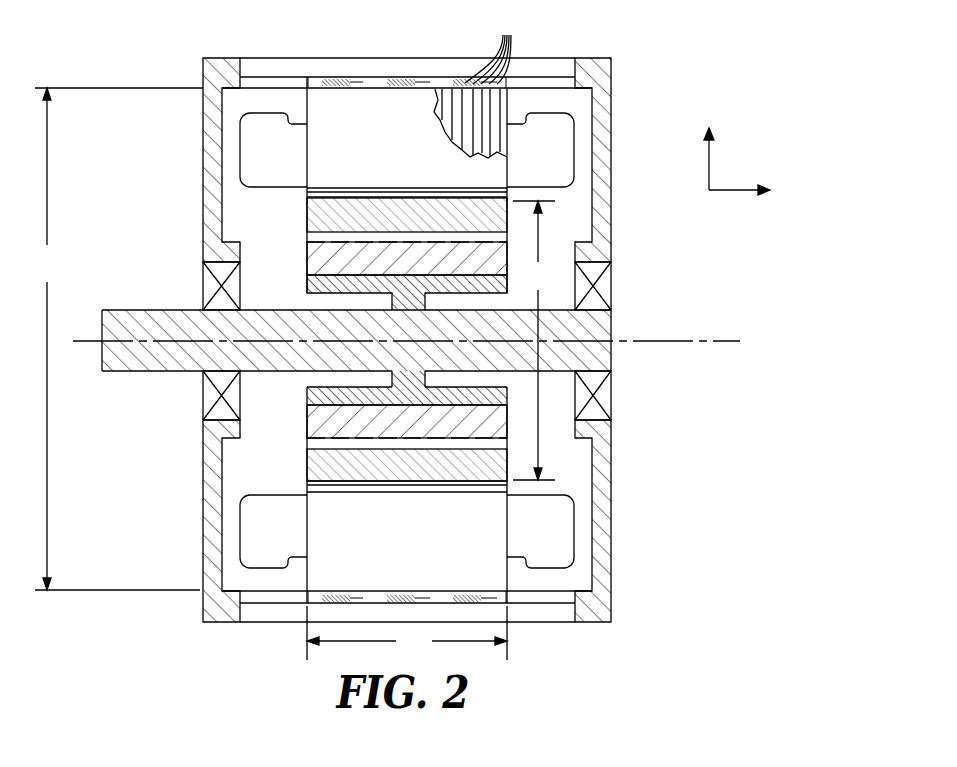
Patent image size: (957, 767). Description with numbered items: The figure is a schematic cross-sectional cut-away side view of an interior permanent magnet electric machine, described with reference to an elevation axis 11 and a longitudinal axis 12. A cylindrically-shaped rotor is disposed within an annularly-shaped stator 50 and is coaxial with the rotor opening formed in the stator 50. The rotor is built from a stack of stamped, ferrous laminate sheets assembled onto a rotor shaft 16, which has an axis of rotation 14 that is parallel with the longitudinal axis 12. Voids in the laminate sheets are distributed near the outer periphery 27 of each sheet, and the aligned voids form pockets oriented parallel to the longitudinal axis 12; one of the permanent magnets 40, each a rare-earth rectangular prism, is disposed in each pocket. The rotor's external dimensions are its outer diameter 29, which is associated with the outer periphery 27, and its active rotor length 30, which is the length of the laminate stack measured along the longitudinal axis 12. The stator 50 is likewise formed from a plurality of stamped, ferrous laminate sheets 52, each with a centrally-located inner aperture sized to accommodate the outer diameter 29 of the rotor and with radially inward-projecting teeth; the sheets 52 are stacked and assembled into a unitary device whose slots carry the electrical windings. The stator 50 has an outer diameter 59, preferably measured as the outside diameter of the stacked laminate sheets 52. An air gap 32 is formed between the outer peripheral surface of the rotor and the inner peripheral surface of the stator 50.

The elevation axis 11 is at (698, 127).
The longitudinal axis 12 is at (771, 204).
The axis of rotation 14 is at (707, 337).
The rotor shaft 16 is at (158, 373).
The outer periphery 27 is at (412, 199).
The outer diameter 29 is at (525, 289).
The active rotor length 30 is at (400, 655).
The air gap 32 is at (372, 193).
The permanent magnets 40 is at (320, 217).
The stator 50 is at (307, 112).
The laminate sheets 52 is at (477, 84).
The outer diameter 59 is at (35, 277).